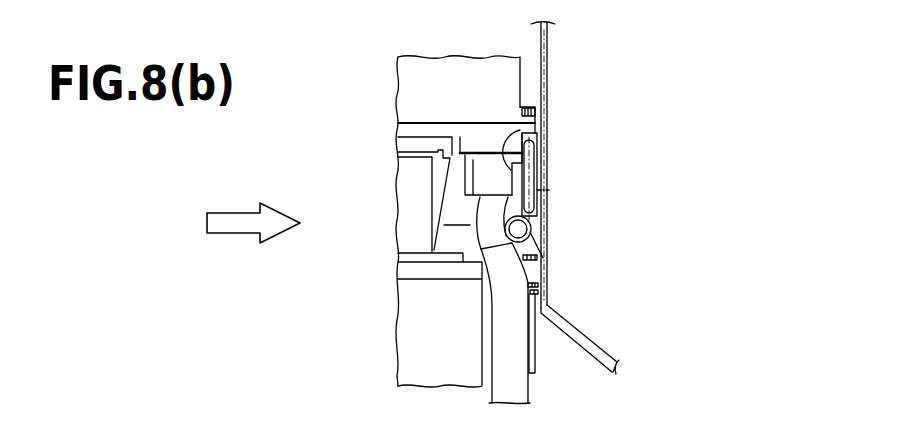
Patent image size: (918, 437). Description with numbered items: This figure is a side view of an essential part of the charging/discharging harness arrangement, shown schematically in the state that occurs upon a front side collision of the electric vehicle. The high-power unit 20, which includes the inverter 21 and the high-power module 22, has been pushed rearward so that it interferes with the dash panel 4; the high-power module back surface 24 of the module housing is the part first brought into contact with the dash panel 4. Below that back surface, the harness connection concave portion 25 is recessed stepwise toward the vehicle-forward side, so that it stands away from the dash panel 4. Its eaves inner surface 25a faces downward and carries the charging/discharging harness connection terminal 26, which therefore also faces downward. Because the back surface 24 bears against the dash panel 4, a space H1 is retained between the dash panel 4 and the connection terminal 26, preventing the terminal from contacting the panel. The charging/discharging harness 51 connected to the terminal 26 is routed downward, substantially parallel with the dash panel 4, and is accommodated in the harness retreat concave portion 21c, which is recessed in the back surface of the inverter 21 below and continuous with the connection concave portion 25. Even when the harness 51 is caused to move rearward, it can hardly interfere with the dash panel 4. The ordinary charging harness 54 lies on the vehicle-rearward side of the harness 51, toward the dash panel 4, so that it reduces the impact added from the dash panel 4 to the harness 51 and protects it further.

The high-power unit 20 is at (383, 78).
The high-power module 22 is at (436, 76).
The high-power module back surface 24 is at (517, 77).
The dash panel 4 is at (548, 77).
The charging/discharging harness connection terminal 26 is at (536, 132).
The eaves inner surface 25a is at (538, 174).
The space H1 is at (540, 193).
The ordinary charging harness 54 is at (532, 228).
The harness connection concave portion 25 is at (460, 191).
The inverter 21 is at (430, 320).
The harness retreat concave portion 21c is at (489, 338).
The charging/discharging harness 51 is at (512, 388).